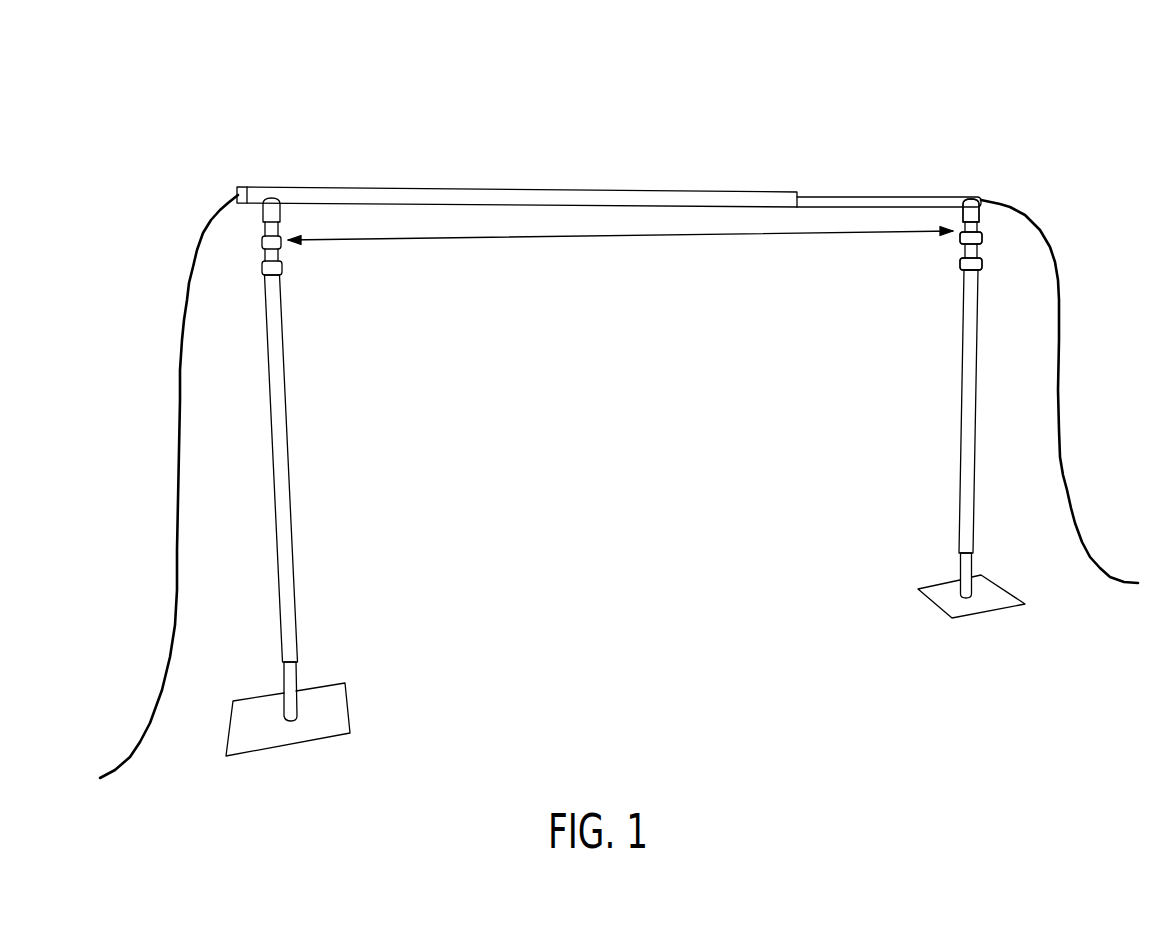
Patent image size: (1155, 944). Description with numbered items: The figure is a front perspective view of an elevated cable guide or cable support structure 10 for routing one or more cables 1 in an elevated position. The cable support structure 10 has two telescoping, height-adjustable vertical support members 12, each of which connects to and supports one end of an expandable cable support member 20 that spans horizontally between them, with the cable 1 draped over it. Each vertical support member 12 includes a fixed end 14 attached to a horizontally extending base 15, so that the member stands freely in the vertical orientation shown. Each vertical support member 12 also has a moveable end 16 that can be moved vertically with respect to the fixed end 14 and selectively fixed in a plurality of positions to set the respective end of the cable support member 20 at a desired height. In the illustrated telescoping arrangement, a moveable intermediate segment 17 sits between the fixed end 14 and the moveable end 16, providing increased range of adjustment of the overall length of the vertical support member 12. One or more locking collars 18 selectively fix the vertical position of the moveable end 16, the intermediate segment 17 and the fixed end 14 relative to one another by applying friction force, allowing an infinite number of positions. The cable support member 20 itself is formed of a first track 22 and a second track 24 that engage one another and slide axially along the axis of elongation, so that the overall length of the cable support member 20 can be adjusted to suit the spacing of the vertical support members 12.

The cable 1 is at (178, 434).
The cable support structure 10 is at (722, 152).
The vertical support member 12 is at (292, 537).
The fixed end 14 is at (967, 562).
The base 15 is at (952, 603).
The moveable end 16 is at (982, 238).
The intermediate segment 17 is at (961, 238).
The locking collar 18 is at (962, 264).
The cable support member 20 is at (609, 139).
The first track 22 is at (343, 188).
The second track 24 is at (893, 196).